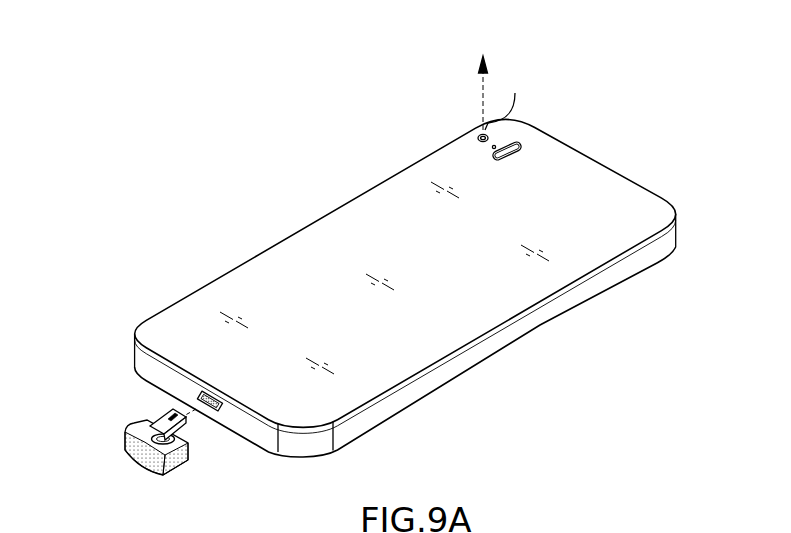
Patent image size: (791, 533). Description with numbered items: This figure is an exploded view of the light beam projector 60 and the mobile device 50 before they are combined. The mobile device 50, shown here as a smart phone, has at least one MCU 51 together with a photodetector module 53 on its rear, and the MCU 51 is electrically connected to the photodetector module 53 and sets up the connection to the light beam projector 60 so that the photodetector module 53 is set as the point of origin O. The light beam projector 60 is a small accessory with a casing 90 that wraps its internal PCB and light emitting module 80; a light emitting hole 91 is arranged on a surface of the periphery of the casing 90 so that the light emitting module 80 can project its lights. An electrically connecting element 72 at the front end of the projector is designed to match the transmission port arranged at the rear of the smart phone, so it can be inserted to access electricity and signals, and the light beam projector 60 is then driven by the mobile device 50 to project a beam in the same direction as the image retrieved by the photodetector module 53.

The mobile device 50 is at (280, 228).
The MCU 51 is at (204, 408).
The photodetector module 53 is at (484, 133).
The light beam projector 60 is at (134, 444).
The electrically connecting element 72 is at (186, 426).
The light emitting module 80 is at (157, 453).
The casing 90 is at (137, 449).
The light emitting hole 91 is at (156, 426).